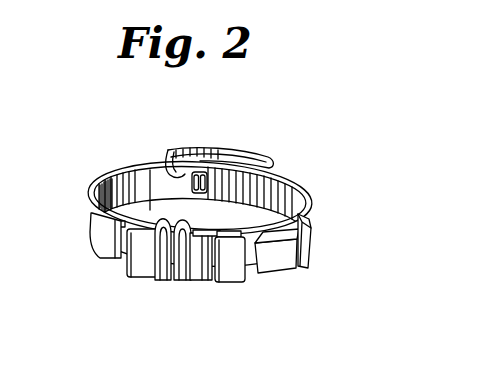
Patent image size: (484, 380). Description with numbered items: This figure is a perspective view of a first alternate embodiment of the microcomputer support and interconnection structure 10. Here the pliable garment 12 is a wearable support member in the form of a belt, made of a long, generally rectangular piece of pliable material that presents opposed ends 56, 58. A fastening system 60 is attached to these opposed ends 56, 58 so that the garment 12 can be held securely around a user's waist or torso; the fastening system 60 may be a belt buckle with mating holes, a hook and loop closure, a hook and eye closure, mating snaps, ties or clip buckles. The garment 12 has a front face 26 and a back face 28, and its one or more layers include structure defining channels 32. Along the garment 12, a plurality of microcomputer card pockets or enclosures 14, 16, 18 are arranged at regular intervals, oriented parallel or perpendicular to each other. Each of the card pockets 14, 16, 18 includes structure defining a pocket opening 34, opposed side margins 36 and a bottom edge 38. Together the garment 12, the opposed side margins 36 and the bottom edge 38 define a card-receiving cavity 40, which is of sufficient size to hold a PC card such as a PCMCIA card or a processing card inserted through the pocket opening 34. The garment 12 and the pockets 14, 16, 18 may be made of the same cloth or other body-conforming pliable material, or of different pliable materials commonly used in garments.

The microcomputer support and interconnection structure 10 is at (362, 186).
The pliable garment 12 is at (303, 201).
The microcomputer card pocket 14 is at (277, 264).
The microcomputer card pocket 16 is at (306, 256).
The microcomputer card pocket 18 is at (238, 283).
The front face 26 is at (92, 238).
The back face 28 is at (122, 177).
The channels 32 is at (156, 275).
The pocket opening 34 is at (197, 235).
The opposed side margins 36 is at (179, 282).
The bottom edge 38 is at (188, 265).
The card-receiving cavity 40 is at (92, 198).
The opposed end 56 is at (268, 162).
The opposed end 58 is at (273, 180).
The fastening system 60 is at (213, 150).